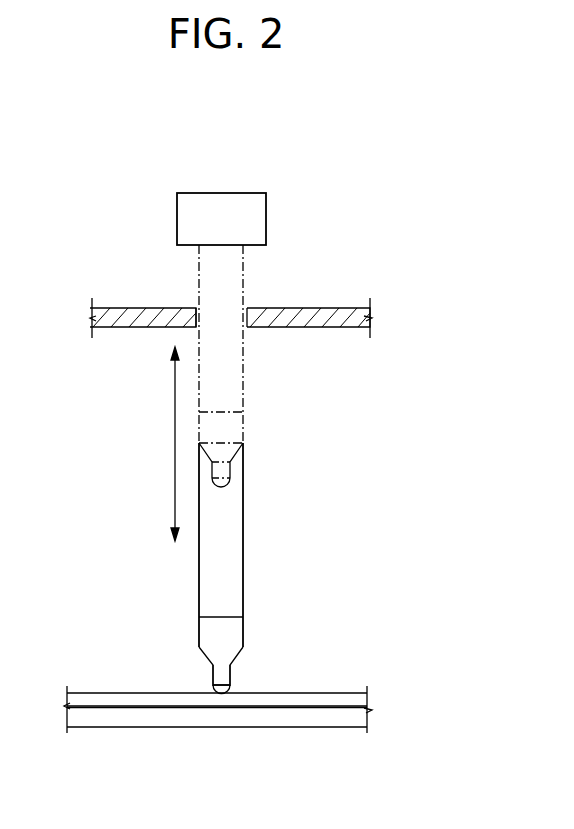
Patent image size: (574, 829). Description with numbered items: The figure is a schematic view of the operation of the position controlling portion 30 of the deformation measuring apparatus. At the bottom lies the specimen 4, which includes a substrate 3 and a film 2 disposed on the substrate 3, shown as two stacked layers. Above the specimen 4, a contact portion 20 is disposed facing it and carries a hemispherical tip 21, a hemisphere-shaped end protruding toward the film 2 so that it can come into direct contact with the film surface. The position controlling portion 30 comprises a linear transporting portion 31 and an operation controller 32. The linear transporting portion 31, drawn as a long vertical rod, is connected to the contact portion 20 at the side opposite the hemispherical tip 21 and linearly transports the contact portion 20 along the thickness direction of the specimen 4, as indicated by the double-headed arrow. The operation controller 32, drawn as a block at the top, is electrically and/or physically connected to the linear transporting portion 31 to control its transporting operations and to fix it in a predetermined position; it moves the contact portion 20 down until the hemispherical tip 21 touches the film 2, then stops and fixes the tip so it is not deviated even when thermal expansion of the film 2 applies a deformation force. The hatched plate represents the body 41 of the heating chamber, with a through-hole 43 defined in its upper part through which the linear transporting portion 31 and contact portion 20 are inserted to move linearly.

The film 2 is at (352, 698).
The substrate 3 is at (352, 716).
The specimen 4 is at (251, 711).
The contact portion 20 is at (231, 675).
The hemispherical tip 21 is at (213, 690).
The position controlling portion 30 is at (474, 503).
The linear transporting portion 31 is at (242, 464).
The operation controller 32 is at (266, 212).
The body 41 is at (340, 318).
The through-hole 43 is at (218, 324).